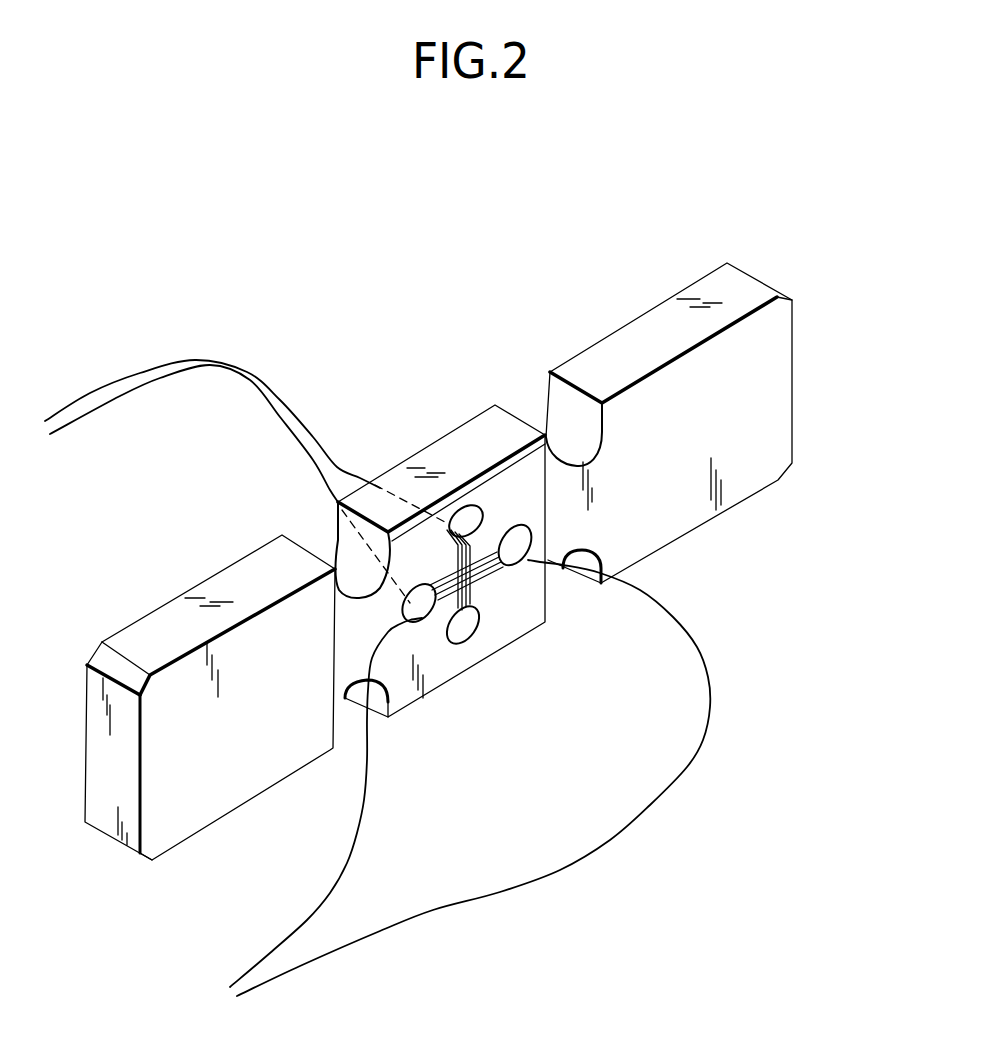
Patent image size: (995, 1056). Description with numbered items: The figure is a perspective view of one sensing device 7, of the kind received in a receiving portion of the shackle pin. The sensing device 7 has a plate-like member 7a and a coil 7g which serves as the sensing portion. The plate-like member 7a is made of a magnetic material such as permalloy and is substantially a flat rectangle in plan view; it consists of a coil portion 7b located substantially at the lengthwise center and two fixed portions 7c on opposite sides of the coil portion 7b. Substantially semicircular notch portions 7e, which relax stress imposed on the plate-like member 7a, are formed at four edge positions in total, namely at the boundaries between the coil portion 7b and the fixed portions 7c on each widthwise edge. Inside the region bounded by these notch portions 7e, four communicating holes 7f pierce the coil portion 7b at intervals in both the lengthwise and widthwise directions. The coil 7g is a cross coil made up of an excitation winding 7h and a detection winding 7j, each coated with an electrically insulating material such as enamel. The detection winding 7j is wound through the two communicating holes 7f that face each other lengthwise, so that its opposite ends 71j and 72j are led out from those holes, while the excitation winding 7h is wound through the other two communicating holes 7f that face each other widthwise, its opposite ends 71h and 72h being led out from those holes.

The sensing device 7 is at (818, 403).
The plate-like member 7a is at (792, 318).
The coil portion 7b is at (394, 474).
The fixed portion 7c is at (160, 614).
The notch portion 7e is at (333, 538).
The communicating hole 7f is at (515, 522).
The coil 7g is at (545, 540).
The excitation winding 7h is at (475, 575).
The detection winding 7j is at (490, 573).
The end of the detection winding 71j is at (166, 362).
The end of the detection winding 72j is at (98, 407).
The end of the excitation winding 71h is at (322, 898).
The end of the excitation winding 72h is at (452, 910).